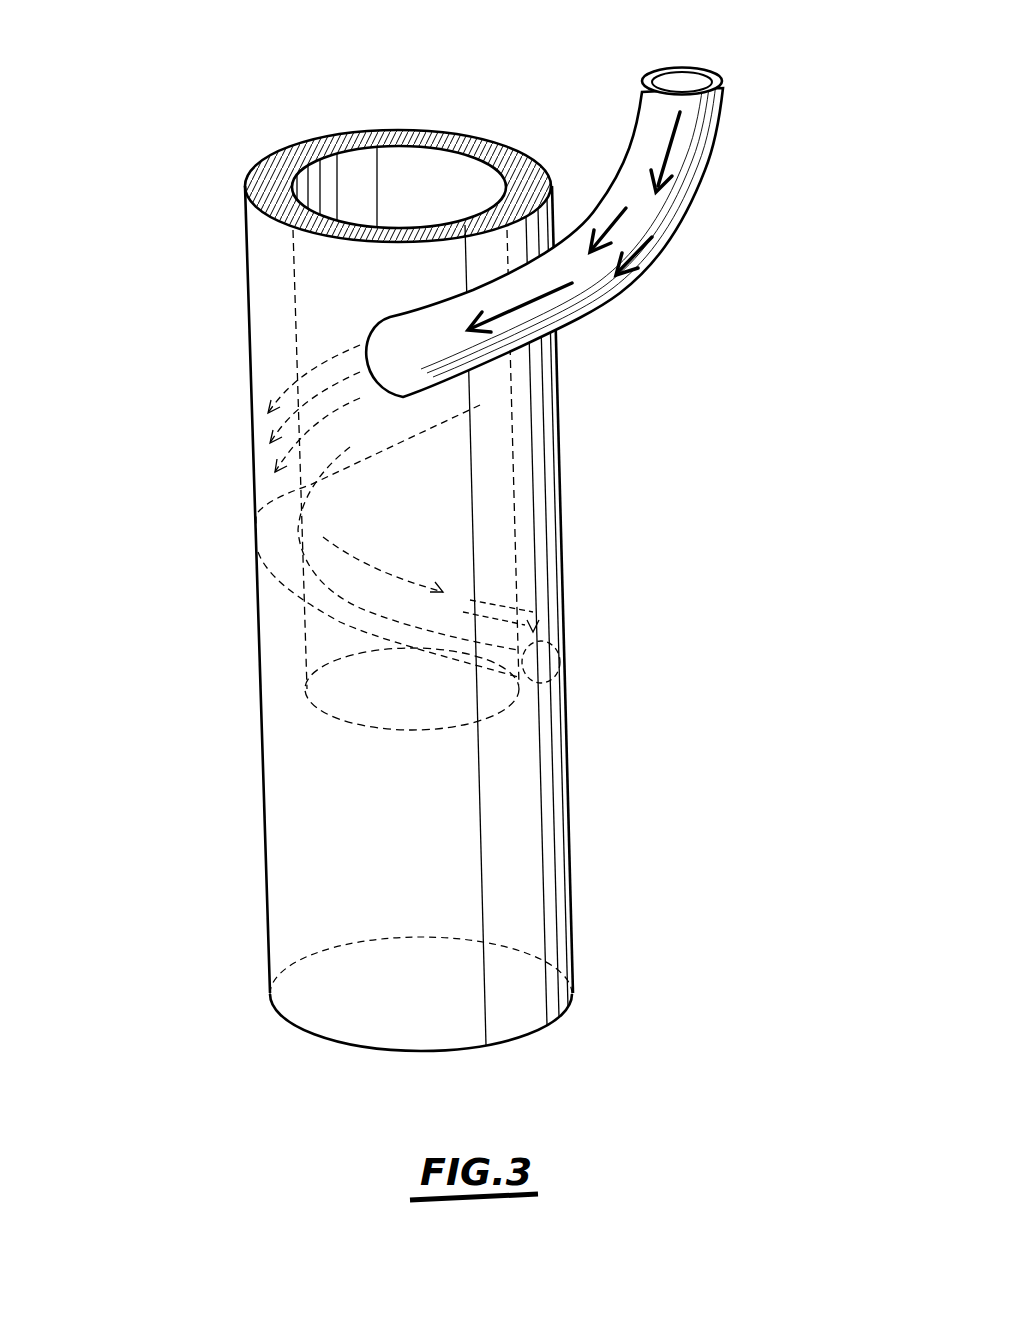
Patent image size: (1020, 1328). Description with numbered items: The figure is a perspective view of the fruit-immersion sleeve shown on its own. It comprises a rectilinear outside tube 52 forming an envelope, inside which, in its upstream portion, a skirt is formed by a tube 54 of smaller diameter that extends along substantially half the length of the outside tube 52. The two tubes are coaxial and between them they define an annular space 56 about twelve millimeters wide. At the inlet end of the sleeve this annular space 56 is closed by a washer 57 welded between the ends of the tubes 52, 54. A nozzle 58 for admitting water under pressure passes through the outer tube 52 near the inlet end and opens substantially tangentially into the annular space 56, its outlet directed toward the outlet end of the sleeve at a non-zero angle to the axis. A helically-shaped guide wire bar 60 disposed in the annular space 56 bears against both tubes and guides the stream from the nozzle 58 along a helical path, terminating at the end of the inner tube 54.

The outside tube 52 is at (566, 775).
The tube of smaller diameter 54 is at (513, 540).
The annular space 56 is at (540, 463).
The washer 57 is at (446, 133).
The nozzle 58 is at (552, 331).
The helically-shaped guide wire bar 60 is at (268, 530).